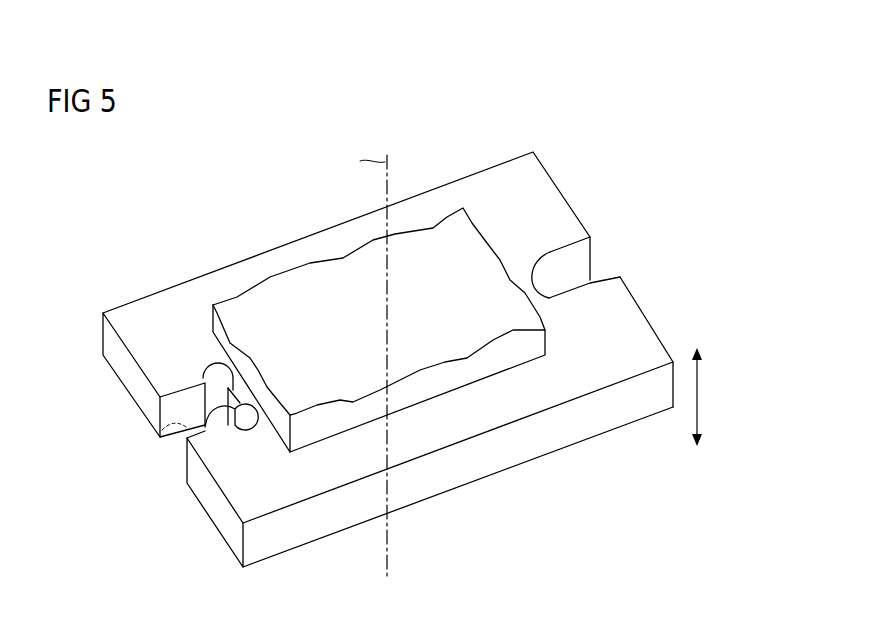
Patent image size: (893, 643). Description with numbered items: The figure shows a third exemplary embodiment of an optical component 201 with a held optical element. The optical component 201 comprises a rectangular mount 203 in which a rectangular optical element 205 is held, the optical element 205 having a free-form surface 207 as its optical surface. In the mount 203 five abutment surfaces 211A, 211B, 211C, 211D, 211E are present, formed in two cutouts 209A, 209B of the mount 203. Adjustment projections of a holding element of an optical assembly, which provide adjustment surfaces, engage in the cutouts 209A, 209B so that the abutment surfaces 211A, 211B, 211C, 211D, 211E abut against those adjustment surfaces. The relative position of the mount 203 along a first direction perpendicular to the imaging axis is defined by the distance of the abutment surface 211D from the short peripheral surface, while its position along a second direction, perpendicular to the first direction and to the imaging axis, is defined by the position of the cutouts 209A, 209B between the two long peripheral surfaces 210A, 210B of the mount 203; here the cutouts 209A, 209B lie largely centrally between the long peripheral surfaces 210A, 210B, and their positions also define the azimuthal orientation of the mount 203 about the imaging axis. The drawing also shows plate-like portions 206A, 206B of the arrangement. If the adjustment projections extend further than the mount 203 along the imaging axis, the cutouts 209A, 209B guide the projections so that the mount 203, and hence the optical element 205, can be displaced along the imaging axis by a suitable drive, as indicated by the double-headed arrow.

The optical component 201 is at (247, 169).
The mount 203 is at (488, 183).
The optical element 205 is at (282, 420).
The plate element 206A is at (646, 316).
The plate element 206B is at (213, 498).
The free-form surface 207 is at (292, 290).
The cutout 209A is at (608, 264).
The cutout 209B is at (160, 452).
The long peripheral surface 210A is at (490, 462).
The long peripheral surface 210B is at (326, 222).
The abutment surface 211A is at (586, 252).
The abutment surface 211B is at (608, 290).
The abutment surface 211C is at (180, 430).
The abutment surface 211D is at (230, 410).
The abutment surface 211E is at (186, 407).